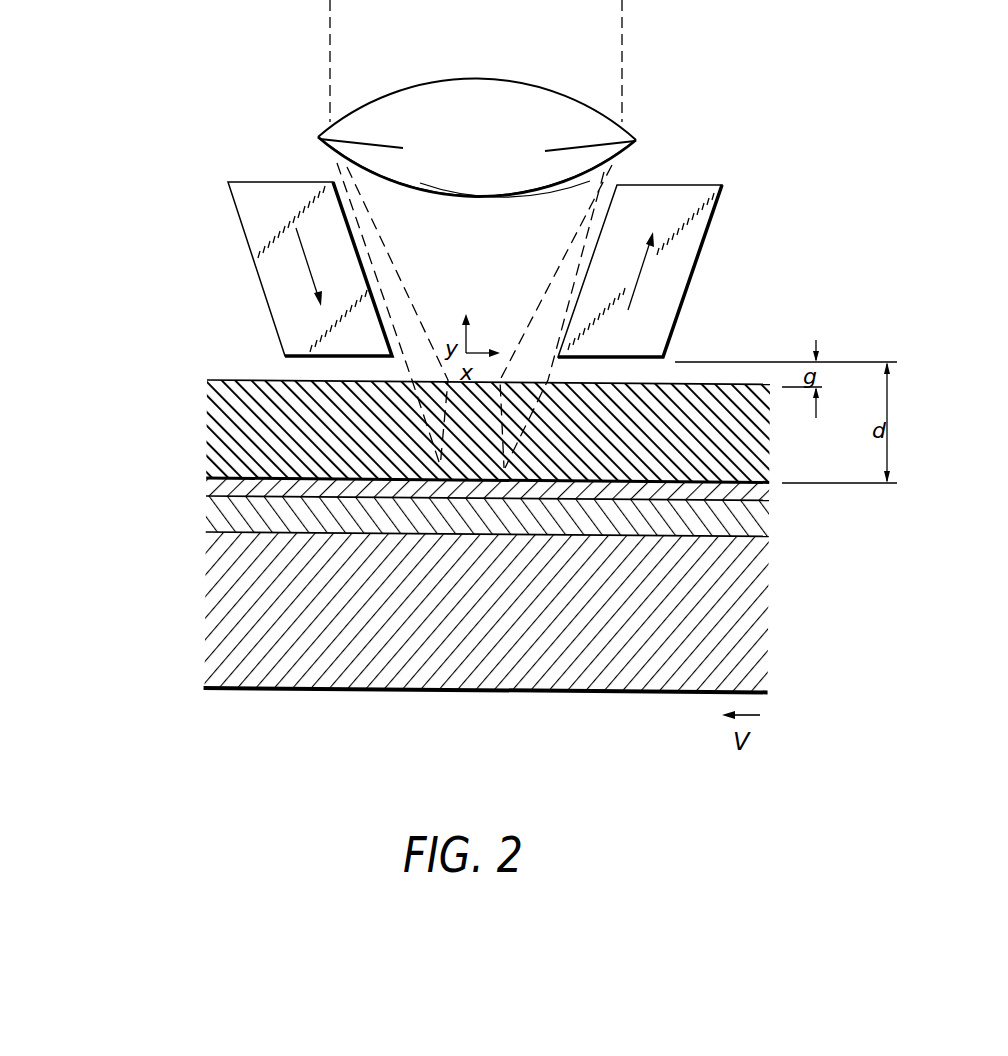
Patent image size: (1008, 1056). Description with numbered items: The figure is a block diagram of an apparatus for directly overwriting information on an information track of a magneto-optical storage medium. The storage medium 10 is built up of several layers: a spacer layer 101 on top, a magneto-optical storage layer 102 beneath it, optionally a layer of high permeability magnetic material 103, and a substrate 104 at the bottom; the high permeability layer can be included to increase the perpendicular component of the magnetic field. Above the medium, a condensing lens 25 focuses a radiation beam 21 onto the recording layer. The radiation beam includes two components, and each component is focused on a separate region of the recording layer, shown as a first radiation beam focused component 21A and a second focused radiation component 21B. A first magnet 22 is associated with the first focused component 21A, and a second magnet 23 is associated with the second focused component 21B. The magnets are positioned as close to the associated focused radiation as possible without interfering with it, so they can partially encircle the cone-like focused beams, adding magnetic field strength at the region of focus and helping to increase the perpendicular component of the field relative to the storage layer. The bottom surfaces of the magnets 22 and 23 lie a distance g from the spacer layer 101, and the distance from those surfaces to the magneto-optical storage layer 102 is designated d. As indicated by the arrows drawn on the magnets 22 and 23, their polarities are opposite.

The storage medium 10 is at (403, 535).
The radiation beam 21 is at (328, 48).
The first radiation beam focused component 21A is at (506, 468).
The second focused radiation component 21B is at (440, 468).
The first magnet 22 is at (700, 255).
The second magnet 23 is at (258, 268).
The condensing lens 25 is at (447, 77).
The spacer layer 101 is at (207, 422).
The magneto-optical storage layer 102 is at (207, 486).
The high permeability magnetic material layer 103 is at (207, 518).
The substrate 104 is at (207, 636).